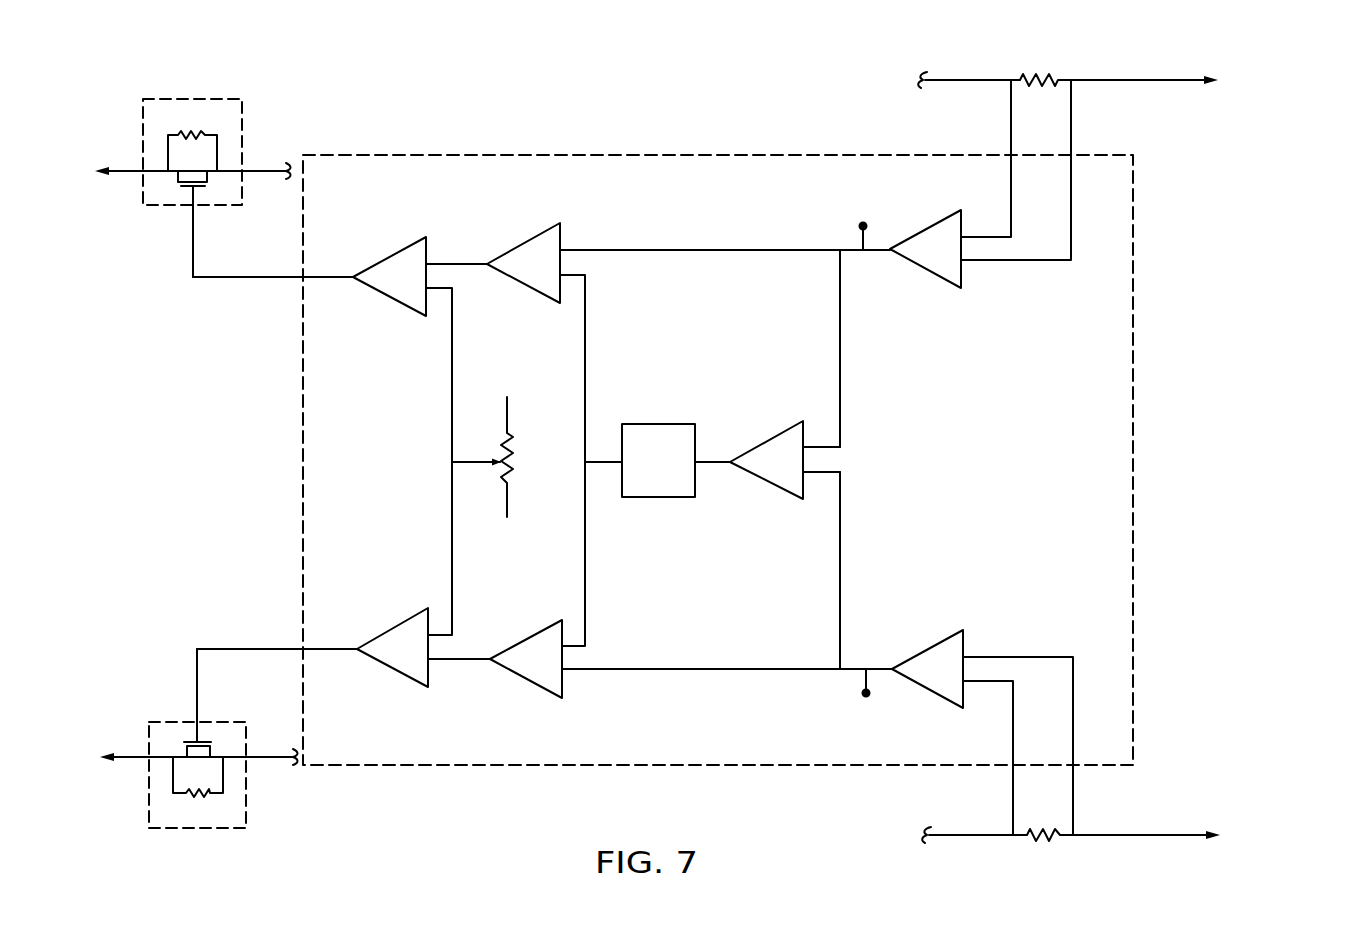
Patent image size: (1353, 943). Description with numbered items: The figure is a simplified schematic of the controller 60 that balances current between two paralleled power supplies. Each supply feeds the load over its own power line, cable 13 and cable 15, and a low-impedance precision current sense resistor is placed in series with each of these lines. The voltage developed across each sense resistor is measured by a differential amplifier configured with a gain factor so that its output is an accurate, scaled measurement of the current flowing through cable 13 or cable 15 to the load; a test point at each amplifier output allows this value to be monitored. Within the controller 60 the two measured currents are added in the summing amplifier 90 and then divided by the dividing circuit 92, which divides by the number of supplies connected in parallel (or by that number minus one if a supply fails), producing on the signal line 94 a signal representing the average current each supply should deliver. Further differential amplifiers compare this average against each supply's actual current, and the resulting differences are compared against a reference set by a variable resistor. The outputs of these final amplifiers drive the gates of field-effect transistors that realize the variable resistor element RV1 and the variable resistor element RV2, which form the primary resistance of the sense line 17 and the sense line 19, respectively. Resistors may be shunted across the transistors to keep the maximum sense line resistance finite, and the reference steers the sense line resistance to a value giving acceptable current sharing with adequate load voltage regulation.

The cable 13 is at (955, 80).
The cable 15 is at (960, 836).
The sense line 17 is at (133, 170).
The sense line 19 is at (132, 759).
The controller 60 is at (1133, 344).
The summing amplifier 90 is at (773, 488).
The dividing circuit 92 is at (658, 498).
The signal line 94 is at (585, 341).
The variable resistor element RV1 is at (203, 99).
The variable resistor element RV2 is at (208, 829).